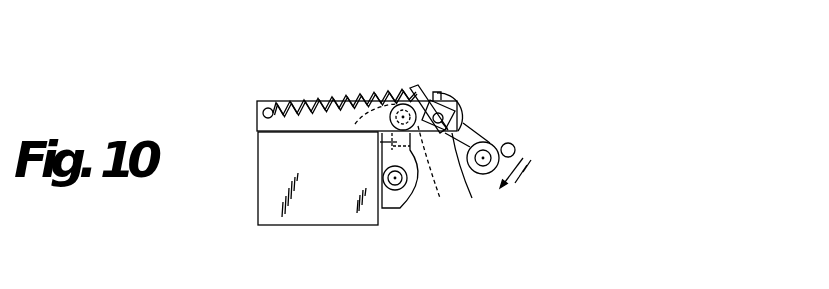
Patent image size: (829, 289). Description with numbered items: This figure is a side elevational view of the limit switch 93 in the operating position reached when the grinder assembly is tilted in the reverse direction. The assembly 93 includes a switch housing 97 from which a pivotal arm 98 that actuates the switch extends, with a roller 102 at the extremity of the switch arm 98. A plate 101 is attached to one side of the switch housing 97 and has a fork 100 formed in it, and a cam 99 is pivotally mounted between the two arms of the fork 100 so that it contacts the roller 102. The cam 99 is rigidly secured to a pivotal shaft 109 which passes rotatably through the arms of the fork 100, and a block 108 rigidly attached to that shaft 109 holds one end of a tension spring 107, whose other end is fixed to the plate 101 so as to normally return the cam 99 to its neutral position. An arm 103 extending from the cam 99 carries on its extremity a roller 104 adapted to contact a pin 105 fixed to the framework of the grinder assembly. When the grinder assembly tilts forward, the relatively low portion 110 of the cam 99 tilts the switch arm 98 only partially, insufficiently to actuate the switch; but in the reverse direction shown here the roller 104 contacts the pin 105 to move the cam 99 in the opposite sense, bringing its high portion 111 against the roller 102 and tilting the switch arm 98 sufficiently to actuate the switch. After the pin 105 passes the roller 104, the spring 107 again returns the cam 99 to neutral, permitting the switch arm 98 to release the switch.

The limit switch 93 is at (249, 204).
The switch housing 97 is at (273, 162).
The pivotal arm 98 is at (384, 141).
The cam 99 is at (437, 96).
The fork 100 is at (458, 104).
The plate 101 is at (271, 106).
The roller 102 is at (355, 121).
The arm 103 is at (462, 131).
The roller 104 is at (495, 140).
The pin 105 is at (516, 149).
The tension spring 107 is at (322, 99).
The block 108 is at (425, 92).
The pivotal shaft 109 is at (484, 174).
The low portion 110 is at (418, 191).
The high portion 111 is at (447, 93).